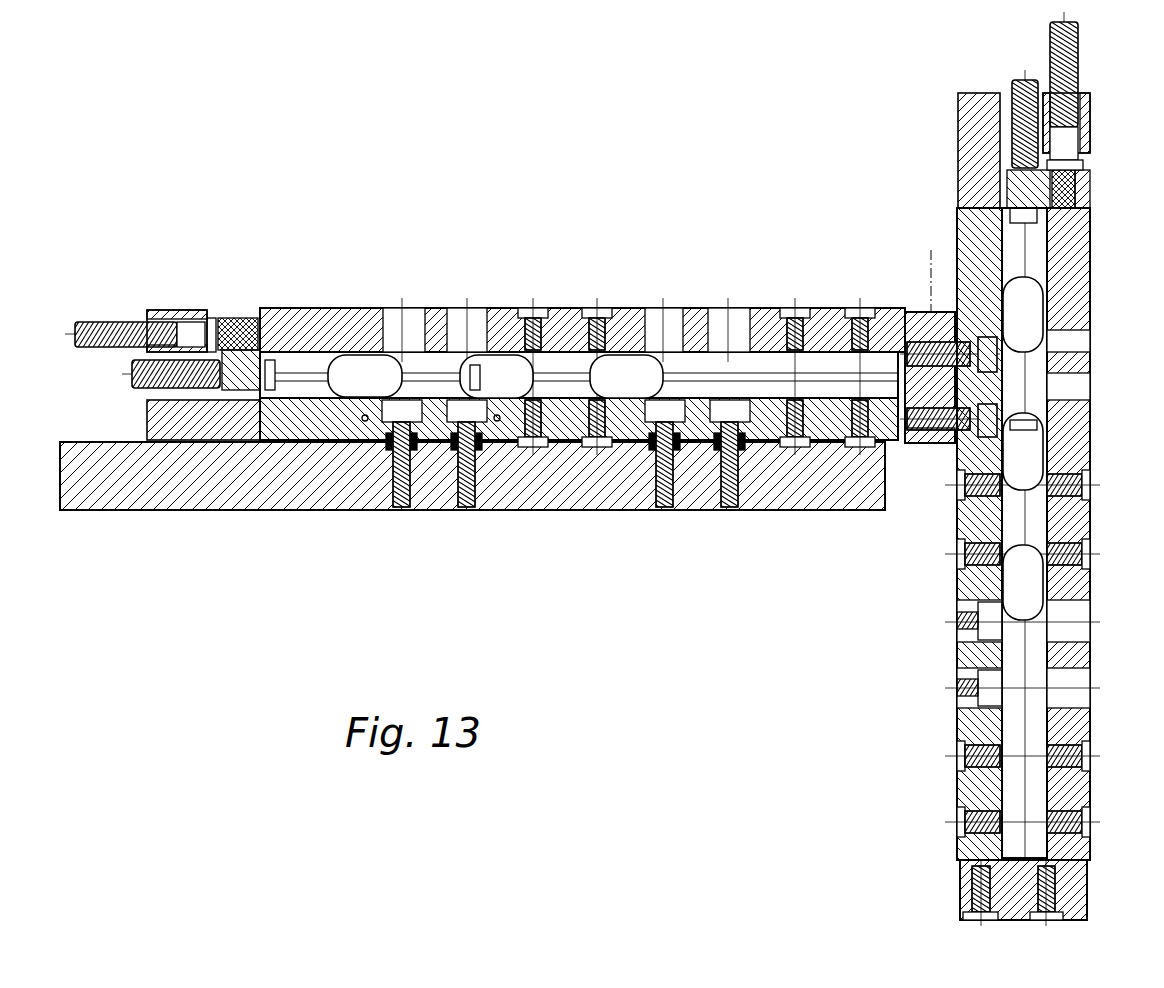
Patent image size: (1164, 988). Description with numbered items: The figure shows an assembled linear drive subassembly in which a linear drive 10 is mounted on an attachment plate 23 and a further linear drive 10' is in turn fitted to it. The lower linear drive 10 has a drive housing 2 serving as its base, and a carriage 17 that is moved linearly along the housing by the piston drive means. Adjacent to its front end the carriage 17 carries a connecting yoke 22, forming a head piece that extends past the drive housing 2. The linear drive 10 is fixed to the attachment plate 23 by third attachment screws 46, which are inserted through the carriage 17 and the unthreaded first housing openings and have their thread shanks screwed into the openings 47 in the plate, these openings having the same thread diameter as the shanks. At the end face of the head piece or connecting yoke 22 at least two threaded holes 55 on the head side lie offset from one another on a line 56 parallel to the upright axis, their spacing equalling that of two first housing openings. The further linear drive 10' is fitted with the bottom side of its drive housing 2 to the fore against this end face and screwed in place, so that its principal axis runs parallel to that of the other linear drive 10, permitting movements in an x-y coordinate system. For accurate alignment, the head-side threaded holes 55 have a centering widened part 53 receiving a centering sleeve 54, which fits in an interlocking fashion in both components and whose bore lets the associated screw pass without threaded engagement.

The drive housing 2 is at (965, 655).
The linear drive 10 is at (170, 332).
The further linear drive 10' is at (1061, 375).
The carriage 17 is at (695, 312).
The connecting yoke 22 is at (912, 312).
The attachment plate 23 is at (108, 492).
The third attachment screw 46 is at (465, 452).
The opening in the plate 47 is at (661, 452).
The centering widened part 53 is at (990, 454).
The centering sleeve 54 is at (985, 398).
The threaded hole on the head side 55 is at (921, 444).
The line 56 is at (931, 250).